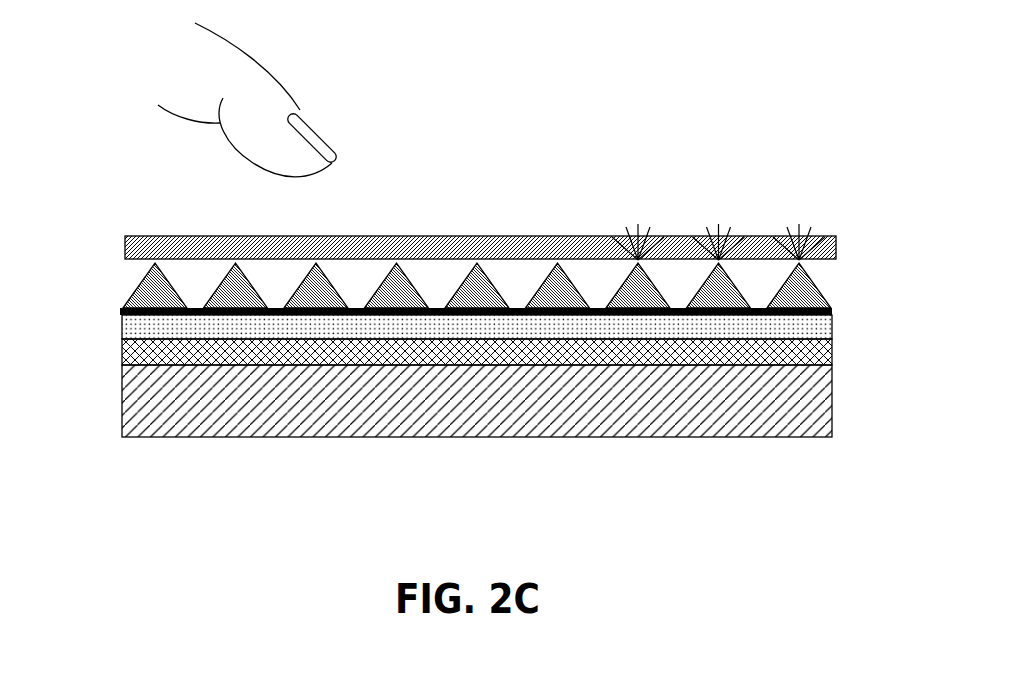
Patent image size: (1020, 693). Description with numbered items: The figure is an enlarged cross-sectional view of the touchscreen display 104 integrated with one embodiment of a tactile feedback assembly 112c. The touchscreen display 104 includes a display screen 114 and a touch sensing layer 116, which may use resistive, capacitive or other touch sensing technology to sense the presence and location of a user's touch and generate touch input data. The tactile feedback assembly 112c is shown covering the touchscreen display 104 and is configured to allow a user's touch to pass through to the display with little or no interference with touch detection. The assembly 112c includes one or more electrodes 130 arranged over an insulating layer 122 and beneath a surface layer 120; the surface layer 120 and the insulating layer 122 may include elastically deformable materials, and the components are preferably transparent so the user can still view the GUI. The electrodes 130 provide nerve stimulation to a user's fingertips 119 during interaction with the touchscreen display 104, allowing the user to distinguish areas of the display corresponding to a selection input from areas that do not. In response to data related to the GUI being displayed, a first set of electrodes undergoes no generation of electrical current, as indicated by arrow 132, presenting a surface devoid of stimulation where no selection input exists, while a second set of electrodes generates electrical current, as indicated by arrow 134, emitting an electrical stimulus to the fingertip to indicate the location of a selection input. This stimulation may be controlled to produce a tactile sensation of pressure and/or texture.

The touchscreen display 104 is at (113, 342).
The tactile feedback assembly 112c is at (113, 240).
The display screen 114 is at (832, 402).
The touch sensing layer 116 is at (832, 353).
The fingertips 119 is at (252, 166).
The surface layer 120 is at (836, 241).
The insulating layer 122 is at (832, 332).
The electrodes 130 is at (818, 290).
The arrow 132 is at (485, 168).
The arrow 134 is at (710, 166).